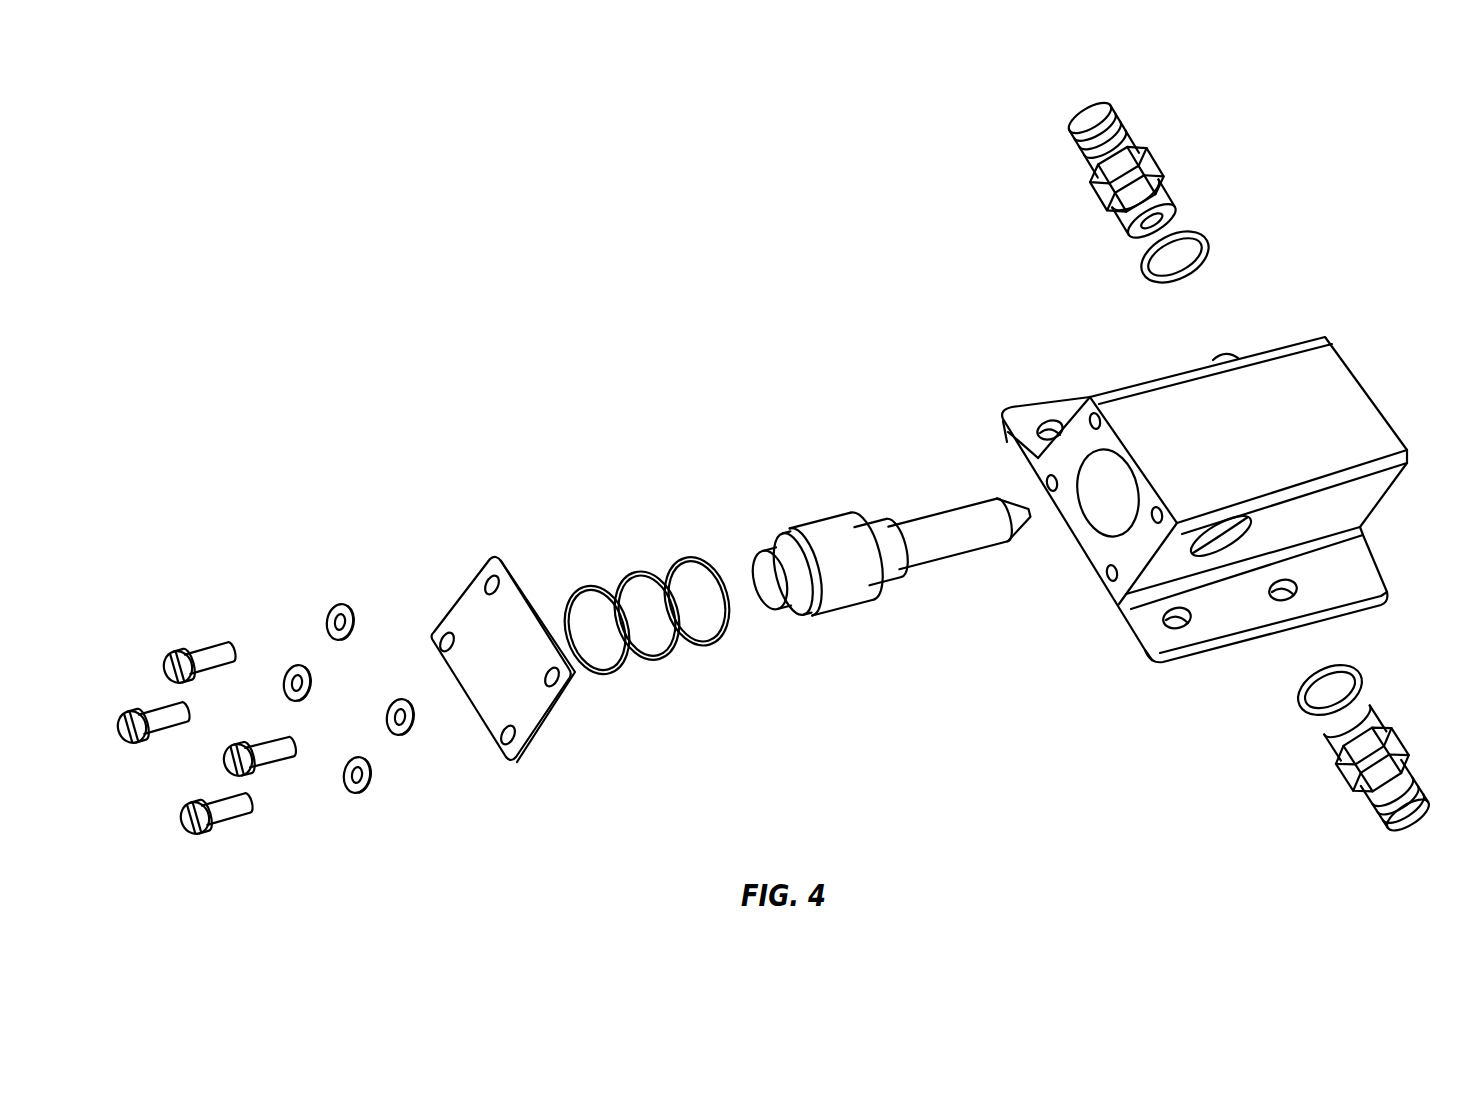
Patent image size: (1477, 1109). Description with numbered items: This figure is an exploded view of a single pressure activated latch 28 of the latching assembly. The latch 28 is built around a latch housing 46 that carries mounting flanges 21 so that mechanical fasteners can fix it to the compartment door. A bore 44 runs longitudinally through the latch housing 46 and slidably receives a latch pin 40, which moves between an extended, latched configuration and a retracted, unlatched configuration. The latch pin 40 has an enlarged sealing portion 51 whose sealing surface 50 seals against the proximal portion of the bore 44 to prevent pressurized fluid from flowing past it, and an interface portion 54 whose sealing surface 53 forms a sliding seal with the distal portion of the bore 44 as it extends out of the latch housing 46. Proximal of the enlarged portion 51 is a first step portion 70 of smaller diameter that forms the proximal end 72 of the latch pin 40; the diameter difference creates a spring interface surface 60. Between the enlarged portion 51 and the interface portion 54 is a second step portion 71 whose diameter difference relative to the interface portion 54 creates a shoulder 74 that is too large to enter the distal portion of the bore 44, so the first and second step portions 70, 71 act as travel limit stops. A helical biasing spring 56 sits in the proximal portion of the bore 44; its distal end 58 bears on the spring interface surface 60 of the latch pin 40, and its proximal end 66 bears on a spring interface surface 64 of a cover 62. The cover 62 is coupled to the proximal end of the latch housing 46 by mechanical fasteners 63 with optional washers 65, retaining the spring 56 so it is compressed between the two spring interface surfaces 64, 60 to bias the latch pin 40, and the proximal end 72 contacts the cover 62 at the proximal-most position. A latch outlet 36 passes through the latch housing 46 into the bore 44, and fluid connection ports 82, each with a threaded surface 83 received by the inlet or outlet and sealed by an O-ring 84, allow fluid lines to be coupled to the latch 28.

The mounting flange 21 is at (1088, 396).
The latch 28 is at (598, 255).
The latch outlet 36 is at (1212, 546).
The latch pin 40 is at (884, 442).
The bore 44 is at (1100, 514).
The latch housing 46 is at (1290, 362).
The sealing surface 50 is at (840, 561).
The enlarged sealing portion 51 is at (810, 570).
The sealing surface 53 is at (961, 531).
The interface portion 54 is at (1016, 517).
The biasing spring 56 is at (613, 580).
The distal end of spring 58 is at (697, 602).
The spring interface surface 60 is at (793, 574).
The cover 62 is at (468, 607).
The mechanical fasteners 63 is at (150, 712).
The spring interface surface 64 is at (507, 550).
The washers 65 is at (294, 665).
The proximal end of spring 66 is at (597, 630).
The first step portion 70 is at (770, 580).
The second step portion 71 is at (871, 554).
The proximal end 72 is at (770, 580).
The shoulder 74 is at (883, 550).
The fluid connection port 82 is at (1153, 125).
The threaded surface 83 is at (1160, 200).
The O-ring 84 is at (1208, 245).